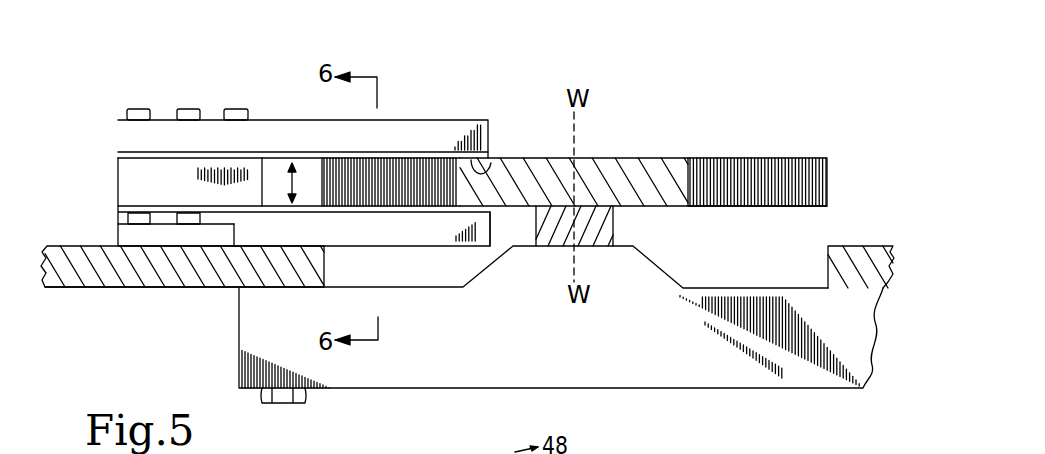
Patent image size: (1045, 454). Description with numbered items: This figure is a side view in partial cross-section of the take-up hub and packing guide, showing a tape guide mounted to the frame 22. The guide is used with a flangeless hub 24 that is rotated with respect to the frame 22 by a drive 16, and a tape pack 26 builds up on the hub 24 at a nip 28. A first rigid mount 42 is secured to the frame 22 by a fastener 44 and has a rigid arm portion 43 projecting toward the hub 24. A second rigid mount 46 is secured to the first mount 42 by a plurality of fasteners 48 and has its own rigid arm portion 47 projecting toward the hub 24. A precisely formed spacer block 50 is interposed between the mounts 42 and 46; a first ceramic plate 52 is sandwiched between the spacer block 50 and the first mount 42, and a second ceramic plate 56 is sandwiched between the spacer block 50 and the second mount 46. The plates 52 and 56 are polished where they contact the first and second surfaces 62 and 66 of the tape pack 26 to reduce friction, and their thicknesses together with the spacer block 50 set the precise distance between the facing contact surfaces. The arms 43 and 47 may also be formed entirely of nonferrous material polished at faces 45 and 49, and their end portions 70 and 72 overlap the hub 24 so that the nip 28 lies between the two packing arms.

The drive 16 is at (639, 342).
The frame 22 is at (95, 284).
The flangeless hub 24 is at (597, 173).
The tape pack 26 is at (740, 165).
The nip 28 is at (313, 190).
The first rigid mount 42 is at (257, 232).
The rigid arm portion 43 is at (304, 245).
The fastener 44 is at (187, 219).
The face 45 is at (488, 210).
The second rigid mount 46 is at (167, 138).
The rigid arm portion 47 is at (263, 138).
The fasteners 48 is at (137, 110).
The groove 49 is at (491, 163).
The spacer block 50 is at (165, 185).
The first ceramic plate 52 is at (430, 158).
The second ceramic plate 56 is at (393, 158).
The first surface 62 is at (720, 208).
The second surface 66 is at (708, 160).
The end portion 70 is at (457, 237).
The end portion 72 is at (453, 137).